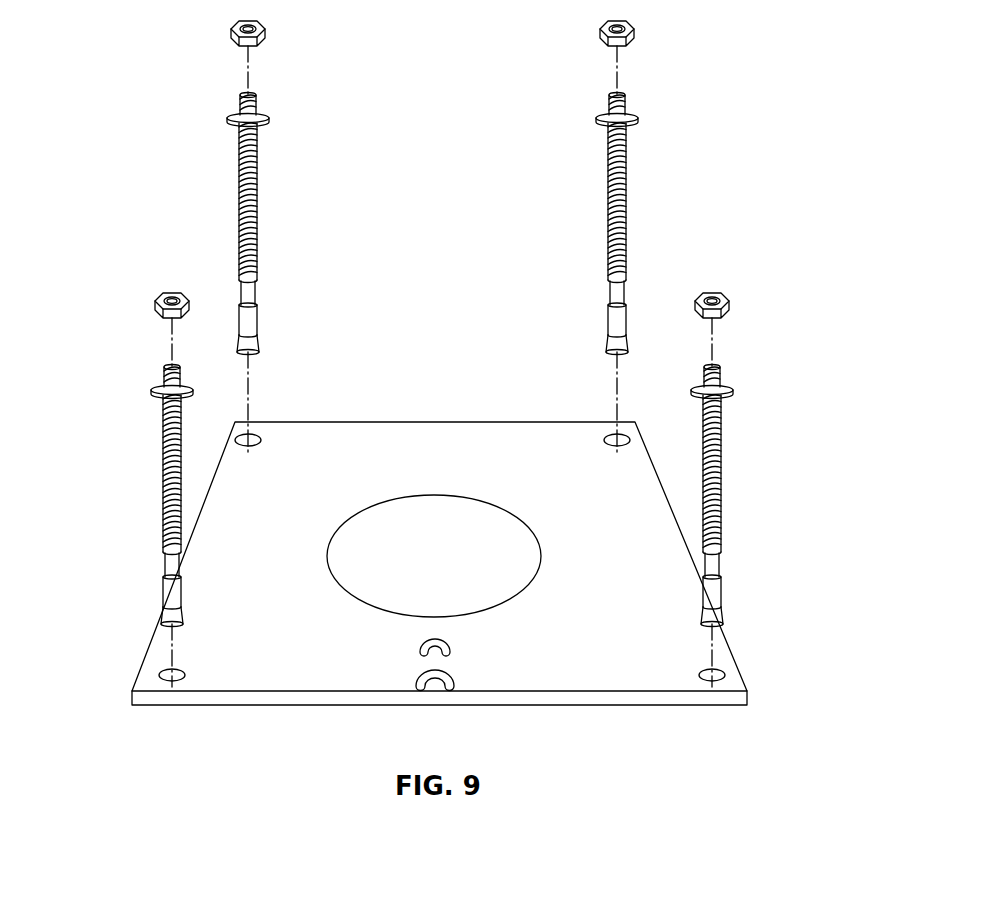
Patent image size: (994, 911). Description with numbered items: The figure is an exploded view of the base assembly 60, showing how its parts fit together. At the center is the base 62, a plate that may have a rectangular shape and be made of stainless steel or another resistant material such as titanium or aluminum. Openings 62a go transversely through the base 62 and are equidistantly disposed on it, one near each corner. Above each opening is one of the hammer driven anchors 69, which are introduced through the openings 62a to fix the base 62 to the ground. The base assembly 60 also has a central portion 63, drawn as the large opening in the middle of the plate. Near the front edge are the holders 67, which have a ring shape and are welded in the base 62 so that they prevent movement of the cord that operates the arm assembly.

The base assembly 60 is at (480, 422).
The base 62 is at (133, 691).
The openings 62a is at (719, 670).
The central portion 63 is at (517, 535).
The holders 67 is at (445, 645).
The hammer driven anchors 69 is at (635, 110).